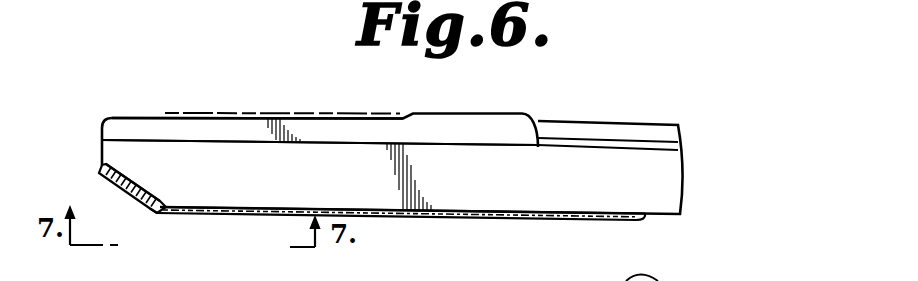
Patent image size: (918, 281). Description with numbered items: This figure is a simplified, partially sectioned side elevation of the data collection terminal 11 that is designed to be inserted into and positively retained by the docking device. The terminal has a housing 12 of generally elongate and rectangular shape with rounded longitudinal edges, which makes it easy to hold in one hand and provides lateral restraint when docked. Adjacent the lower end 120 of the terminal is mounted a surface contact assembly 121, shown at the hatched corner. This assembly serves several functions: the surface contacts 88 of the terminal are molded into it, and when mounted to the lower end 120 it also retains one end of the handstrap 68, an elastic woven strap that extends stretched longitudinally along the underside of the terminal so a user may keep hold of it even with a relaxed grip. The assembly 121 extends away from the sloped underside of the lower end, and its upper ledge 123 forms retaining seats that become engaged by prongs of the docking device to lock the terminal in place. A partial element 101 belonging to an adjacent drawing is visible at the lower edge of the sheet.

The data collection terminal 11 is at (489, 110).
The housing 12 is at (247, 195).
The lower end 120 is at (103, 123).
The surface contacts 88 is at (100, 180).
The surface contact assembly 121 is at (131, 199).
The upper ledge 123 is at (153, 210).
The handstrap 68 is at (222, 213).
The element of adjacent figure 101 is at (672, 276).